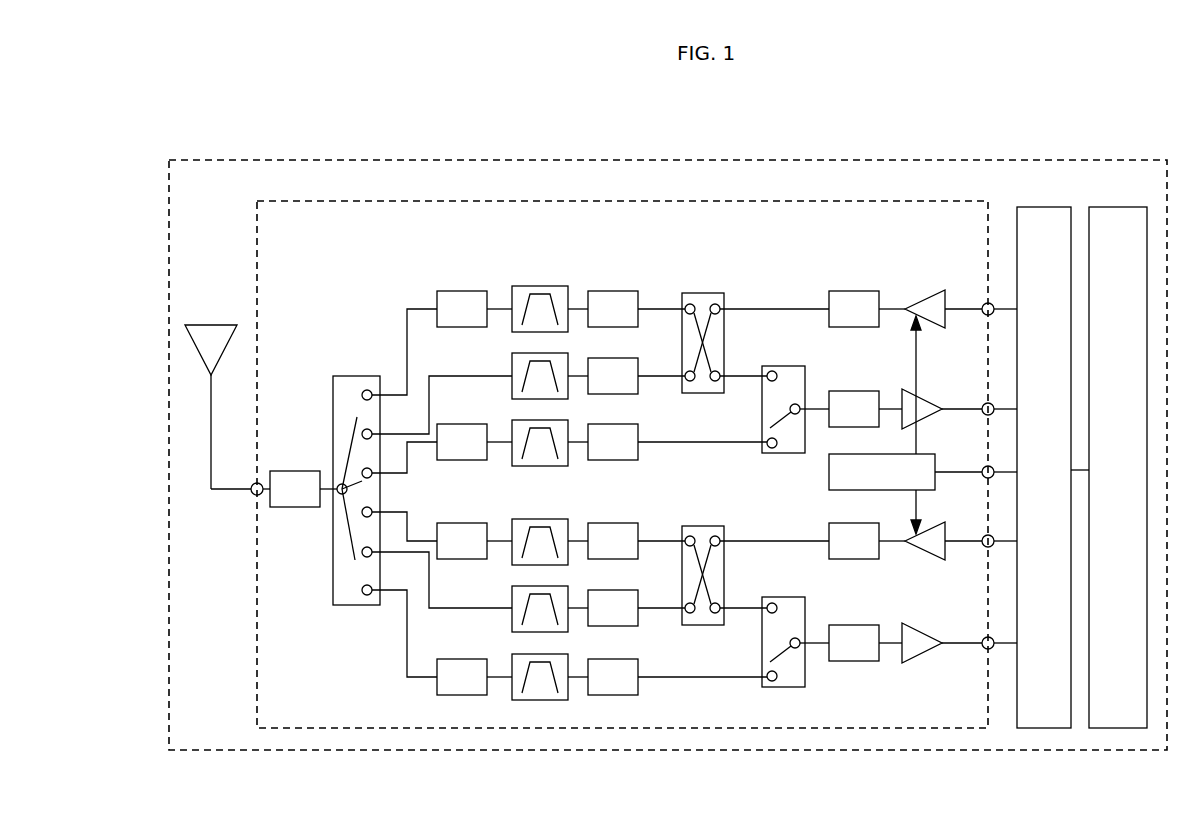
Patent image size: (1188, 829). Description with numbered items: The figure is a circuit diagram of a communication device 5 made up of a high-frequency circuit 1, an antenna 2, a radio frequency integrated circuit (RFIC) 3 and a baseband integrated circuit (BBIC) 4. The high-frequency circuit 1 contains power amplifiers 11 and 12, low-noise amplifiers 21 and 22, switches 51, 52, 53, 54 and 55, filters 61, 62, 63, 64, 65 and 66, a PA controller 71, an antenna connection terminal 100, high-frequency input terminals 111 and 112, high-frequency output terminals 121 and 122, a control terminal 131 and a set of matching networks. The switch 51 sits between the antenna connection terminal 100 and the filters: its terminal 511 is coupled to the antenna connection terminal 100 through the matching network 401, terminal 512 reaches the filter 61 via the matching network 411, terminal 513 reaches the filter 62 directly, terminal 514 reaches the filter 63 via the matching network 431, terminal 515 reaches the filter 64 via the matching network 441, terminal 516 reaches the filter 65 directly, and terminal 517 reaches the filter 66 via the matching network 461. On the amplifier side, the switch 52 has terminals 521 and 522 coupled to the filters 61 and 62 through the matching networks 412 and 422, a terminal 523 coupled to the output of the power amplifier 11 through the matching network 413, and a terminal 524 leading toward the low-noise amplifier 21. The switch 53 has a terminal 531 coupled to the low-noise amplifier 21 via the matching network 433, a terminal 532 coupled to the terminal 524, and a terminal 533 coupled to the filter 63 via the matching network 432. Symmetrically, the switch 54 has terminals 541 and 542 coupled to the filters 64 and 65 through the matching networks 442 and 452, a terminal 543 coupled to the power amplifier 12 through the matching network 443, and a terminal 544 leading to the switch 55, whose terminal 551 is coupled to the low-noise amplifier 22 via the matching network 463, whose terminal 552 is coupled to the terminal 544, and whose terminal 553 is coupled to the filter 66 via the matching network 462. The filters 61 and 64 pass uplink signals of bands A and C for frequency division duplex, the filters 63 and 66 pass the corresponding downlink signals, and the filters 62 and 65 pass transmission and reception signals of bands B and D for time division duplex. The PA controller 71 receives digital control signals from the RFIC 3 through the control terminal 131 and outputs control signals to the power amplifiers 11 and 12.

The high-frequency circuit 1 is at (329, 202).
The antenna 2 is at (201, 326).
The radio frequency integrated circuit 3 is at (1049, 207).
The baseband integrated circuit 4 is at (1113, 207).
The communication device 5 is at (232, 160).
The power amplifier 11 is at (931, 293).
The power amplifier 12 is at (925, 556).
The low-noise amplifier 21 is at (919, 402).
The low-noise amplifier 22 is at (919, 634).
The switch 51 is at (355, 491).
The switch 52 is at (705, 337).
The switch 53 is at (785, 409).
The switch 54 is at (705, 570).
The switch 55 is at (786, 642).
The filter 61 is at (568, 295).
The filter 62 is at (566, 364).
The filter 63 is at (566, 430).
The filter 64 is at (566, 526).
The filter 65 is at (566, 596).
The filter 66 is at (566, 664).
The PA controller 71 is at (875, 450).
The antenna connection terminal 100 is at (251, 498).
The high-frequency input terminal 111 is at (982, 302).
The high-frequency input terminal 112 is at (980, 534).
The high-frequency output terminal 121 is at (980, 403).
The high-frequency output terminal 122 is at (980, 636).
The control terminal 131 is at (978, 467).
The matching network 401 is at (287, 470).
The matching network 411 is at (448, 295).
The matching network 412 is at (602, 291).
The matching network 413 is at (842, 290).
The matching network 422 is at (608, 364).
The matching network 431 is at (448, 428).
The matching network 432 is at (612, 430).
The matching network 433 is at (843, 391).
The matching network 441 is at (448, 525).
The matching network 442 is at (604, 523).
The matching network 443 is at (842, 523).
The matching network 452 is at (612, 596).
The matching network 461 is at (448, 663).
The matching network 462 is at (612, 664).
The matching network 463 is at (843, 623).
The terminal 511 is at (336, 501).
The terminal 512 is at (371, 389).
The terminal 513 is at (373, 432).
The terminal 514 is at (373, 479).
The terminal 515 is at (373, 512).
The terminal 516 is at (373, 561).
The terminal 517 is at (372, 599).
The terminal 521 is at (686, 302).
The terminal 522 is at (685, 381).
The terminal 523 is at (720, 305).
The terminal 524 is at (719, 381).
The terminal 531 is at (797, 404).
The terminal 532 is at (765, 372).
The terminal 533 is at (768, 448).
The terminal 541 is at (686, 534).
The terminal 542 is at (685, 614).
The terminal 543 is at (720, 537).
The terminal 544 is at (719, 614).
The terminal 551 is at (797, 638).
The terminal 552 is at (767, 603).
The terminal 553 is at (768, 681).